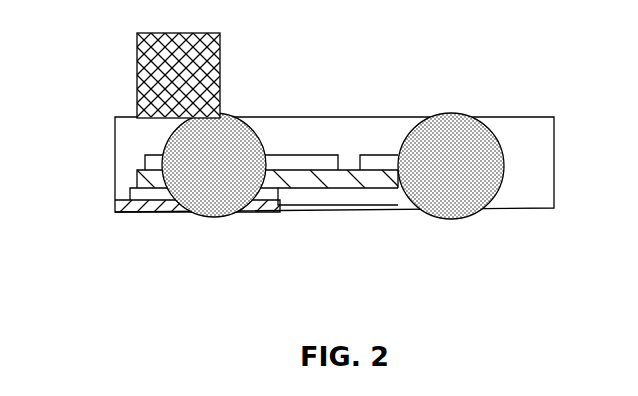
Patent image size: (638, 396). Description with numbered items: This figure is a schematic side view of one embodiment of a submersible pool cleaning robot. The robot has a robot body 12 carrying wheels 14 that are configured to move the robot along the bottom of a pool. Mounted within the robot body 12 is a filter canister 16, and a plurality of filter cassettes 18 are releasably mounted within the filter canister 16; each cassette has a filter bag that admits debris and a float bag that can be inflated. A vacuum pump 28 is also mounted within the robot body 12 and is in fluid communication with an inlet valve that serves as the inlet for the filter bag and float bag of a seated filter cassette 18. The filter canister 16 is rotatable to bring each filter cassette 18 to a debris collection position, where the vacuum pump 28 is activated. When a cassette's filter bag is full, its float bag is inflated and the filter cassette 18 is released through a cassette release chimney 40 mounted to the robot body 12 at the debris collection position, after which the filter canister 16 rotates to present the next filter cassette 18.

The robot body 12 is at (545, 149).
The wheels 14 is at (226, 175).
The filter canister 16 is at (343, 182).
The filter cassettes 18 is at (377, 160).
The vacuum pump 28 is at (133, 195).
The cassette release chimney 40 is at (191, 83).